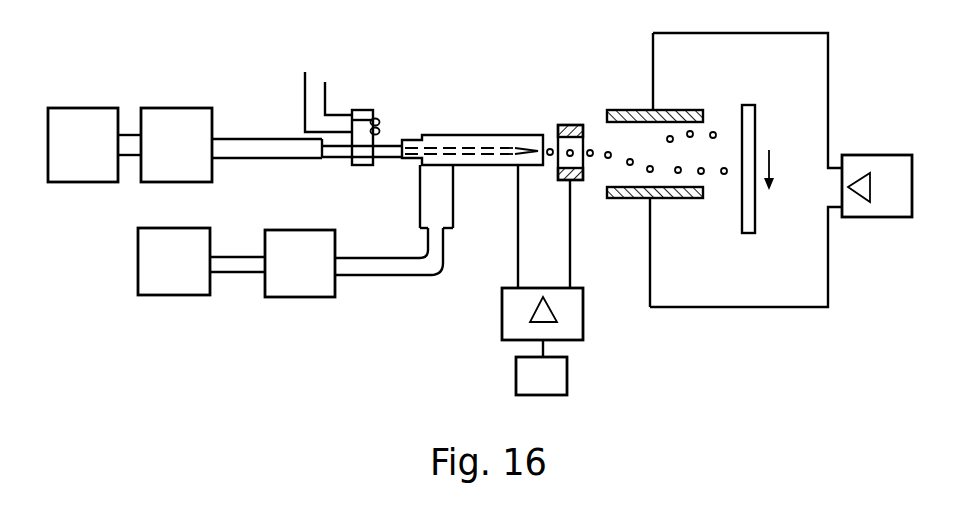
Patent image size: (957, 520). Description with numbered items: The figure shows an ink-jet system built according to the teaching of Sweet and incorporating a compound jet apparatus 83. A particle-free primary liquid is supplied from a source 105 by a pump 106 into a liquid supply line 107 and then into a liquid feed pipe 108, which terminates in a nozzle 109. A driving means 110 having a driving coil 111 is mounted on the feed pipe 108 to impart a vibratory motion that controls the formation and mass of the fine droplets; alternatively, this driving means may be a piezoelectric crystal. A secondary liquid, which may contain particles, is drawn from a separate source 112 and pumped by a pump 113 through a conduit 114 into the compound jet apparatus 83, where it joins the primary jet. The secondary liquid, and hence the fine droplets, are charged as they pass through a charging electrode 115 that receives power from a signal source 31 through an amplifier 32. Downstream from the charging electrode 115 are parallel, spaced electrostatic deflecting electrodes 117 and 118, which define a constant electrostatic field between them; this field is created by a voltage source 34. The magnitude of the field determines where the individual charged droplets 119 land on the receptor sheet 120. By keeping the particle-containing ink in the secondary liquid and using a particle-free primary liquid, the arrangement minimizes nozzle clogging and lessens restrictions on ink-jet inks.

The source 105 is at (102, 159).
The pump 106 is at (195, 159).
The liquid supply line 107 is at (262, 143).
The liquid feed pipe 108 is at (338, 158).
The nozzle 109 is at (530, 148).
The driving means 110 is at (367, 110).
The driving coil 111 is at (380, 122).
The source 112 is at (185, 277).
The pump 113 is at (310, 277).
The conduit 114 is at (389, 271).
The compound jet apparatus 83 is at (461, 205).
The charging electrode 115 is at (566, 125).
The electrostatic deflecting electrode 117 is at (642, 110).
The electrostatic deflecting electrode 118 is at (632, 198).
The charged droplets 119 is at (726, 176).
The receptor sheet 120 is at (750, 125).
The amplifier 32 is at (510, 305).
The signal source 31 is at (552, 388).
The voltage source 34 is at (905, 200).